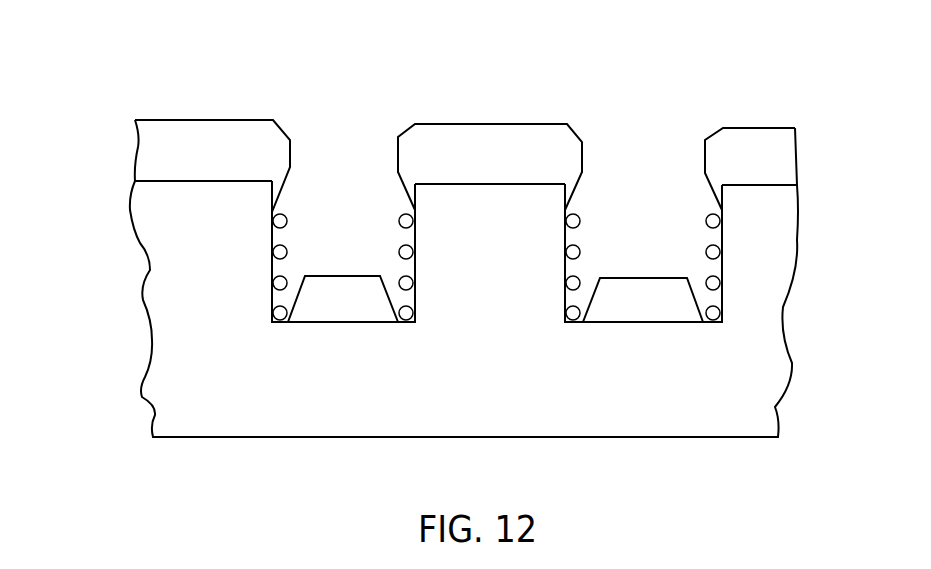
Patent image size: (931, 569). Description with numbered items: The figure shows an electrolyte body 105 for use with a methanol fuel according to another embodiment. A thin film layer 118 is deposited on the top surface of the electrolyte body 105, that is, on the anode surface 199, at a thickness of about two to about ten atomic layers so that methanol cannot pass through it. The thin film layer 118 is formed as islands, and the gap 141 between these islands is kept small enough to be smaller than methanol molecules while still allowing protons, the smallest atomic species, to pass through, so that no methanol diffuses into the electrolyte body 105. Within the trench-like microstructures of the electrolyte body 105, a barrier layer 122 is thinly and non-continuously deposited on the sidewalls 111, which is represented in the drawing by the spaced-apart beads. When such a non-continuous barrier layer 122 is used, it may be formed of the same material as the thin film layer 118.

The electrolyte body 105 is at (200, 370).
The sidewalls 111 is at (722, 302).
The thin film layer 118 is at (640, 278).
The barrier layer 122 is at (717, 257).
The gap 141 is at (278, 102).
The anode surface 199 is at (757, 187).